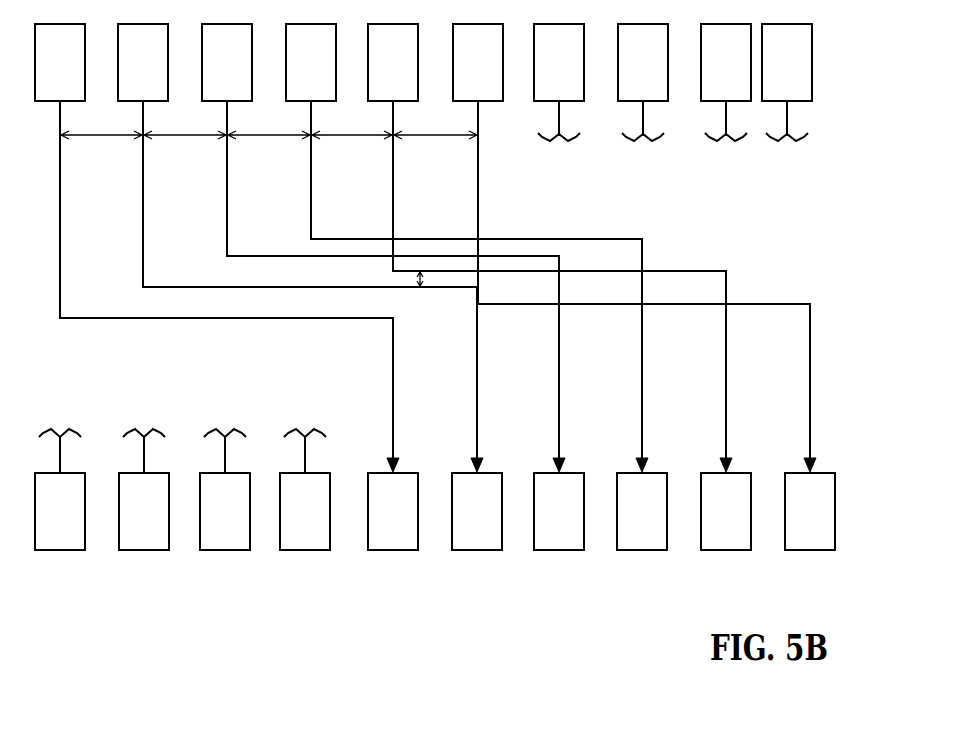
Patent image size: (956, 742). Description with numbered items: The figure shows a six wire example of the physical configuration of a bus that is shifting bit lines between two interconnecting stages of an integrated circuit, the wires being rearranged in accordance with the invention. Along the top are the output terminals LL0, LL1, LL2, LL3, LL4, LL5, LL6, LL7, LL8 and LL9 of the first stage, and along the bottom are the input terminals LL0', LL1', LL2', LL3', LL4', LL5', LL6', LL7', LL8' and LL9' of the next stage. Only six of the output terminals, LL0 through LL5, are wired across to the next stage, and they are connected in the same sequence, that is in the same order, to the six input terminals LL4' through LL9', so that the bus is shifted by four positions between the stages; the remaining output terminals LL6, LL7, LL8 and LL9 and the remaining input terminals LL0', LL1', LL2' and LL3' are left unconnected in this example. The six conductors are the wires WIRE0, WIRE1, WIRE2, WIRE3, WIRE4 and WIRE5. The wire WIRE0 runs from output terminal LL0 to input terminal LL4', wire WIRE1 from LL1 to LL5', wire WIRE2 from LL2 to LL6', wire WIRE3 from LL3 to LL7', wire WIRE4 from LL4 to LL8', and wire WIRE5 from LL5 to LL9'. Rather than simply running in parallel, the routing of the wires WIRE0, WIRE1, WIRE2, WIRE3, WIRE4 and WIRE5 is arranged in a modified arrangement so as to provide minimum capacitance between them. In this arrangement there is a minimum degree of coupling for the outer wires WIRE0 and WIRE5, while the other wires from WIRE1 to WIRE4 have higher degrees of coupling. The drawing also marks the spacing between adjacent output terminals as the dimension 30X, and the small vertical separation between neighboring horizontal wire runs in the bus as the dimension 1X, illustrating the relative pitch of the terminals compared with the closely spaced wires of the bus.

The output terminal LL0 is at (60, 62).
The output terminal LL1 is at (143, 62).
The output terminal LL2 is at (227, 62).
The output terminal LL3 is at (311, 62).
The output terminal LL4 is at (393, 62).
The output terminal LL5 is at (478, 62).
The output terminal LL6 is at (559, 82).
The output terminal LL7 is at (643, 82).
The output terminal LL8 is at (726, 82).
The output terminal LL9 is at (787, 82).
The input terminal LL0' is at (60, 489).
The input terminal LL1' is at (144, 489).
The input terminal LL2' is at (225, 489).
The input terminal LL3' is at (305, 489).
The input terminal LL4' is at (393, 511).
The input terminal LL5' is at (477, 511).
The input terminal LL6' is at (559, 511).
The input terminal LL7' is at (642, 511).
The input terminal LL8' is at (726, 511).
The input terminal LL9' is at (810, 511).
The wire WIRE0 is at (229, 286).
The wire WIRE1 is at (313, 286).
The wire WIRE2 is at (396, 286).
The wire WIRE3 is at (479, 286).
The wire WIRE4 is at (562, 286).
The wire WIRE5 is at (647, 286).
The local line pitch 30X is at (269, 152).
The wire offset 1X is at (422, 279).